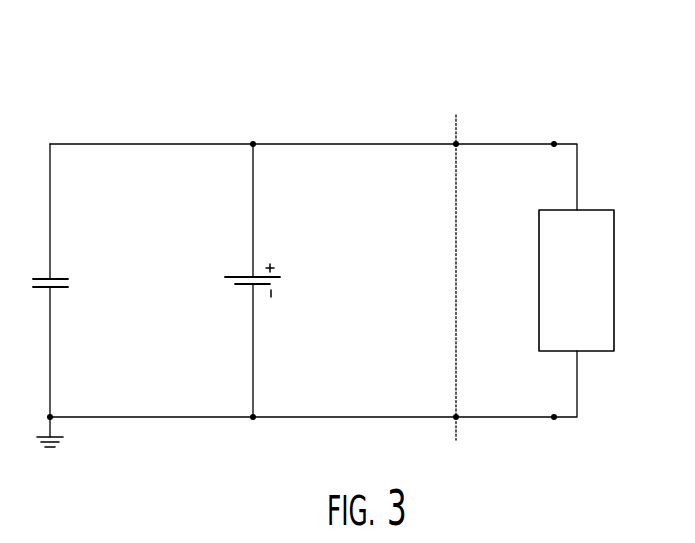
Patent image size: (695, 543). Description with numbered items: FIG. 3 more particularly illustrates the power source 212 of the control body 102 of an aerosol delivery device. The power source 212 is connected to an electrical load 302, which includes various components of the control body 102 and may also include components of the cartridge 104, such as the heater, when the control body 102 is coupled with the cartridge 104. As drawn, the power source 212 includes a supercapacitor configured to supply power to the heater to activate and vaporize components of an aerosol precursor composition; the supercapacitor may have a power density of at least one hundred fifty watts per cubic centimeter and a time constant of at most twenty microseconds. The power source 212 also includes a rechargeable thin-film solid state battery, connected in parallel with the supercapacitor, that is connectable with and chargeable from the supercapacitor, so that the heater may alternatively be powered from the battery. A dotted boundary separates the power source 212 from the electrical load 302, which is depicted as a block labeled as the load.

The control body 102 is at (252, 73).
The cartridge 104 is at (555, 73).
The power source 212 is at (449, 420).
The electrical load 302 is at (602, 210).